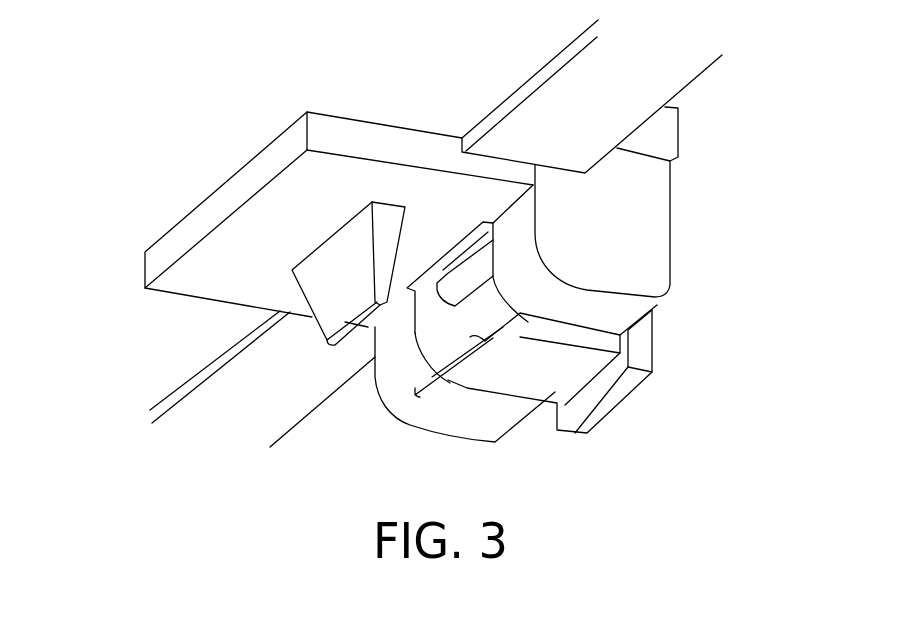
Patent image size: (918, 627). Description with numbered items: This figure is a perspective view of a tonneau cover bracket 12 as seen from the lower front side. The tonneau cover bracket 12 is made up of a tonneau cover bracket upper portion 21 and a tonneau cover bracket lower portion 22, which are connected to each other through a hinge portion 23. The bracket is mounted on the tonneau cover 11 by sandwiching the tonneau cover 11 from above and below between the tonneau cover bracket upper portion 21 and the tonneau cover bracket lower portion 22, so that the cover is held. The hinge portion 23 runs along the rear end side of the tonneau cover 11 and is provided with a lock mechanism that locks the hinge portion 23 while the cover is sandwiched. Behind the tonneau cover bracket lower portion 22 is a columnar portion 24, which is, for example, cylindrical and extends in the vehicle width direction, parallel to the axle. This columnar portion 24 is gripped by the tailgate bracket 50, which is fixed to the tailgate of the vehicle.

The tonneau cover 11 is at (497, 76).
The tonneau cover bracket 12 is at (452, 107).
The tonneau cover bracket upper portion 21 is at (668, 132).
The tonneau cover bracket lower portion 22 is at (267, 243).
The hinge portion 23 is at (378, 346).
The columnar portion 24 is at (415, 335).
The tailgate bracket 50 is at (565, 380).